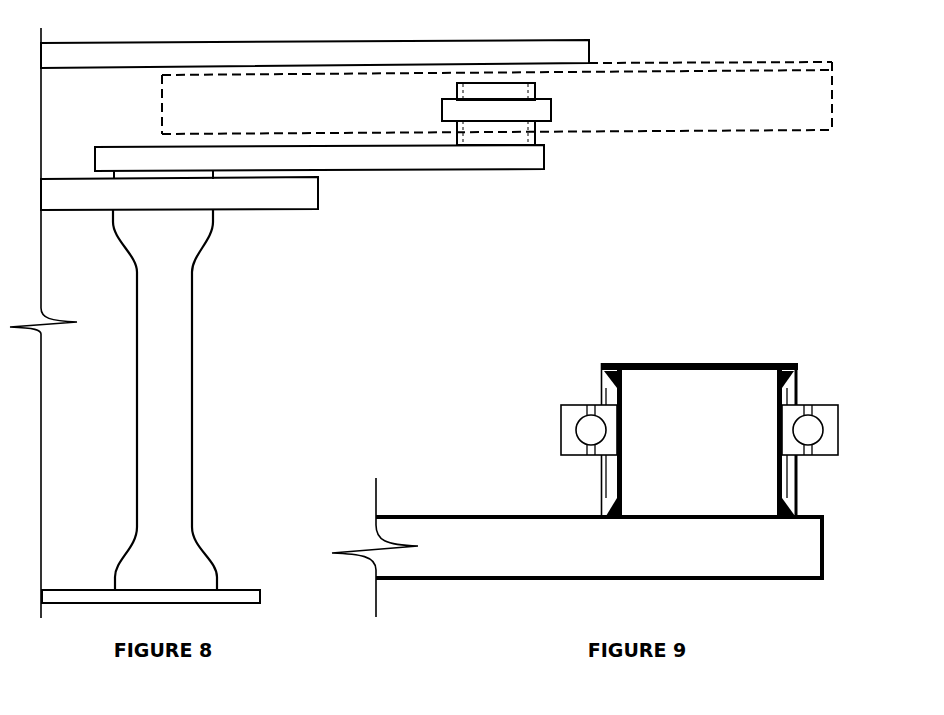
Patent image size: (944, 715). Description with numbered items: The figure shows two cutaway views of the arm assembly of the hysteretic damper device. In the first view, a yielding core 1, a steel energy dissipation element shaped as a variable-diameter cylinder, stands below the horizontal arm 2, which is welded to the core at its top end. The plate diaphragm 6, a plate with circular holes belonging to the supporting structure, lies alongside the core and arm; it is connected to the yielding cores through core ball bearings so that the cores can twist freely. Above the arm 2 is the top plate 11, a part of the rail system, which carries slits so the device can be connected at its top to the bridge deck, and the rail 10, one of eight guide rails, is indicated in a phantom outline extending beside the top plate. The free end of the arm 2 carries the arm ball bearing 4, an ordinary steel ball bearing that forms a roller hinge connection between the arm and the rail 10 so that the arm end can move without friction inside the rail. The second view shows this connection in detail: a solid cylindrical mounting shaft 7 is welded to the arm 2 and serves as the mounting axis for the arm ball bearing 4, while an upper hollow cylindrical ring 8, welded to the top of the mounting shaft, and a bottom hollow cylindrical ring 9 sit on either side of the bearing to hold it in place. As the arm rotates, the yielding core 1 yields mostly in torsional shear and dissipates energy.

In FIG. 8, the yielding core 1 is at (151, 406).
In FIG. 8, the arm 2 is at (319, 162).
In FIG. 9, the arm 2 is at (599, 547).
In FIG. 8, the arm ball bearing 4 is at (496, 114).
In FIG. 9, the arm ball bearing 4 is at (685, 430).
In FIG. 8, the plate diaphragm 6 is at (179, 193).
In FIG. 9, the mounting shaft 7 is at (700, 440).
In FIG. 9, the upper hollow cylindrical ring 8 is at (803, 385).
In FIG. 9, the bottom hollow cylindrical ring 9 is at (805, 488).
In FIG. 8, the rail 10 is at (497, 98).
In FIG. 8, the top plate 11 is at (593, 35).